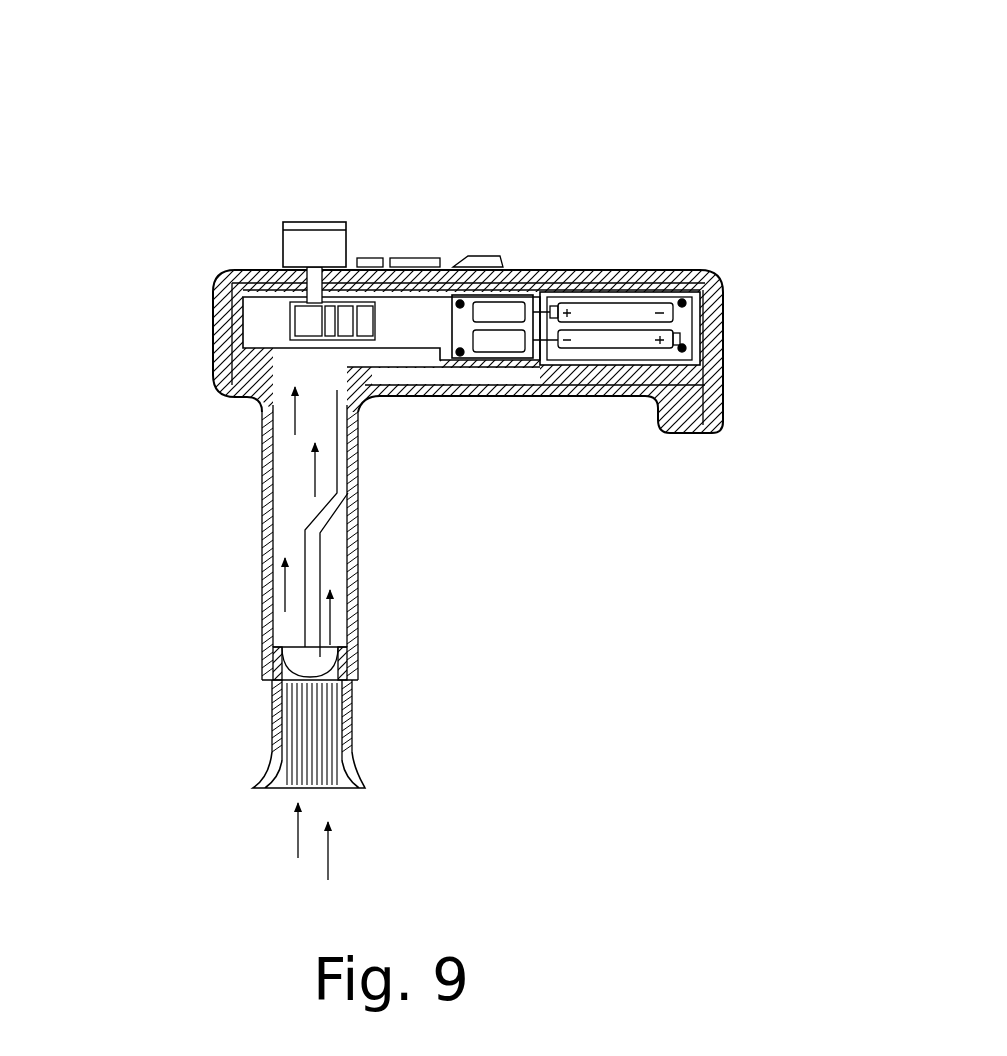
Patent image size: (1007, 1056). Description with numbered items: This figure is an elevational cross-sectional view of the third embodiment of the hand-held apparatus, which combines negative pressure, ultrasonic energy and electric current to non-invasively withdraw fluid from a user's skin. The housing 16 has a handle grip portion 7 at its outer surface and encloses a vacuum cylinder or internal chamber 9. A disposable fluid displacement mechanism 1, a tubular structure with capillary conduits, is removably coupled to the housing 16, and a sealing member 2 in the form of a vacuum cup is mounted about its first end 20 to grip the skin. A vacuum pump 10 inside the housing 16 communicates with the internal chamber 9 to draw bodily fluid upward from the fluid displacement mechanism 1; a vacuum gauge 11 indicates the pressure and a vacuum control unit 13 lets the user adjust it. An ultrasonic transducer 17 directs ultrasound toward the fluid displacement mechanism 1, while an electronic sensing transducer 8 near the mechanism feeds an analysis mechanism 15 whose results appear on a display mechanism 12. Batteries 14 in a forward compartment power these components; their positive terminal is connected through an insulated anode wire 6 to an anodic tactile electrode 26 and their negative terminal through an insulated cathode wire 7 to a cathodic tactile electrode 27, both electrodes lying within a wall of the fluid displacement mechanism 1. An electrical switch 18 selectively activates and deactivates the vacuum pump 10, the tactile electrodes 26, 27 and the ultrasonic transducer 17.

The fluid displacement mechanism 1 is at (355, 722).
The sealing member 2 is at (262, 783).
The insulated anode wire 6 is at (343, 790).
The insulated cathode wire 7 is at (557, 268).
The electronic sensing transducer 8 is at (305, 655).
The internal chamber 9 is at (290, 455).
The vacuum pump 10 is at (262, 328).
The vacuum gauge 11 is at (303, 220).
The display mechanism 12 is at (413, 258).
The vacuum control unit 13 is at (478, 256).
The batteries 14 is at (557, 268).
The analysis mechanism 15 is at (487, 358).
The housing 16 is at (755, 668).
The ultrasonic transducer 17 is at (262, 271).
The electrical switch 18 is at (371, 258).
The first end 20 is at (345, 790).
The anodic tactile electrode 26 is at (362, 612).
The cathodic tactile electrode 27 is at (268, 551).